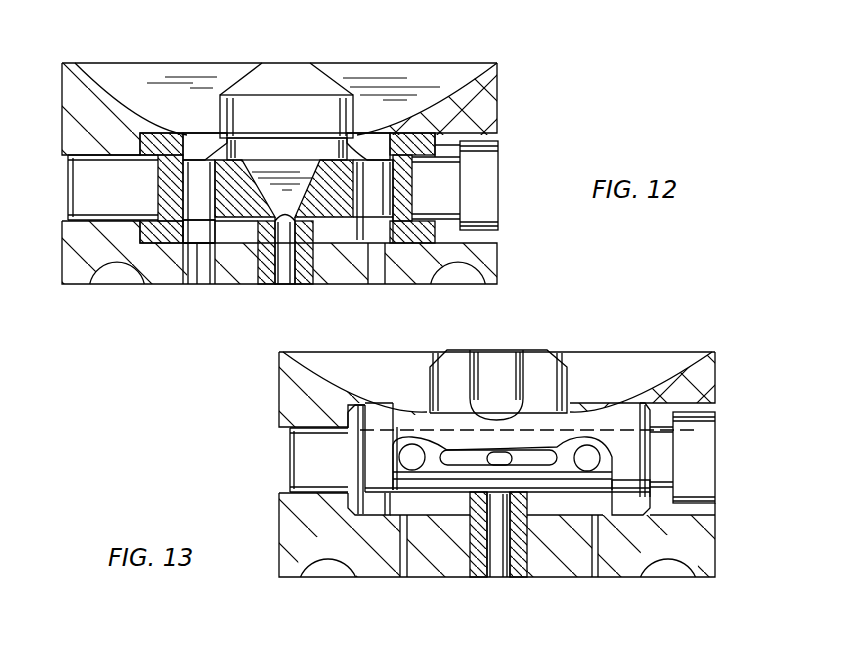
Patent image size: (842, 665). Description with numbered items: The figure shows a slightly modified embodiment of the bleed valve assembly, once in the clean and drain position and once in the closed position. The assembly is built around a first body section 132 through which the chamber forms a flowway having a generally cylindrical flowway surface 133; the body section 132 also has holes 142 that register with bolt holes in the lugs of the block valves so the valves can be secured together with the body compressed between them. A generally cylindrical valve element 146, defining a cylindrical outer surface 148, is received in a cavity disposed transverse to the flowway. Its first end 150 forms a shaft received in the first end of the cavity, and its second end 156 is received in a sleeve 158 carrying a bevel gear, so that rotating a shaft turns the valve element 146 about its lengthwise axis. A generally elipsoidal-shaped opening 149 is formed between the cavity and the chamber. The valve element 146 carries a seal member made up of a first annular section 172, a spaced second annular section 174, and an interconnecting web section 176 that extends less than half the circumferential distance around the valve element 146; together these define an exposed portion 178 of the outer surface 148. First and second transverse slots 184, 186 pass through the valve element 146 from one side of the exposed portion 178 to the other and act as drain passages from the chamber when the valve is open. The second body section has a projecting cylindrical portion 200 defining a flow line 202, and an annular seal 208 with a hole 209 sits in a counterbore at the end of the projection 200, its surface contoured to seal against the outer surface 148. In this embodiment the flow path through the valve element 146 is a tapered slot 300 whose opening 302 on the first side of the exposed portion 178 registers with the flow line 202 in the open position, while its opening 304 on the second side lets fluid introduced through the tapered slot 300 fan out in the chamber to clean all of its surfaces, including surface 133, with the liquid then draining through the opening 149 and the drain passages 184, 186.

In FIG. 12, the first body section 132 is at (490, 265).
In FIG. 13, the first body section 132 is at (707, 537).
In FIG. 12, the cylindrical flowway surface 133 is at (96, 80).
In FIG. 13, the cylindrical flowway surface 133 is at (497, 391).
In FIG. 12, the holes 142 is at (108, 277).
In FIG. 13, the holes 142 is at (328, 568).
In FIG. 12, the valve element 146 is at (236, 190).
In FIG. 13, the valve element 146 is at (552, 477).
In FIG. 13, the cylindrical outer surface 148 is at (423, 495).
In FIG. 12, the elipsoidal-shaped opening 149 is at (190, 140).
In FIG. 12, the first end 150 is at (85, 190).
In FIG. 13, the first end 150 is at (300, 455).
In FIG. 12, the second end 156 is at (444, 168).
In FIG. 13, the second end 156 is at (661, 457).
In FIG. 12, the sleeve 158 is at (487, 178).
In FIG. 13, the sleeve 158 is at (702, 450).
In FIG. 12, the first annular section 172 is at (162, 255).
In FIG. 13, the first annular section 172 is at (375, 507).
In FIG. 12, the second annular section 174 is at (436, 262).
In FIG. 13, the second annular section 174 is at (620, 553).
In FIG. 13, the web section 176 is at (462, 460).
In FIG. 13, the exposed portion 178 is at (537, 452).
In FIG. 12, the first transverse slot 184 is at (203, 172).
In FIG. 13, the first transverse slot 184 is at (412, 452).
In FIG. 12, the second transverse slot 186 is at (367, 172).
In FIG. 13, the second transverse slot 186 is at (588, 458).
In FIG. 12, the projecting cylindrical portion 200 is at (316, 262).
In FIG. 13, the projecting cylindrical portion 200 is at (522, 557).
In FIG. 12, the flow line 202 is at (275, 272).
In FIG. 13, the flow line 202 is at (497, 567).
In FIG. 12, the annular seal 208 is at (362, 252).
In FIG. 13, the annular seal 208 is at (523, 500).
In FIG. 12, the hole 209 is at (289, 268).
In FIG. 13, the hole 209 is at (478, 534).
In FIG. 12, the tapered slot 300 is at (290, 172).
In FIG. 13, the tapered slot 300 is at (494, 425).
In FIG. 12, the opening 302 is at (318, 168).
In FIG. 12, the opening 304 is at (254, 165).